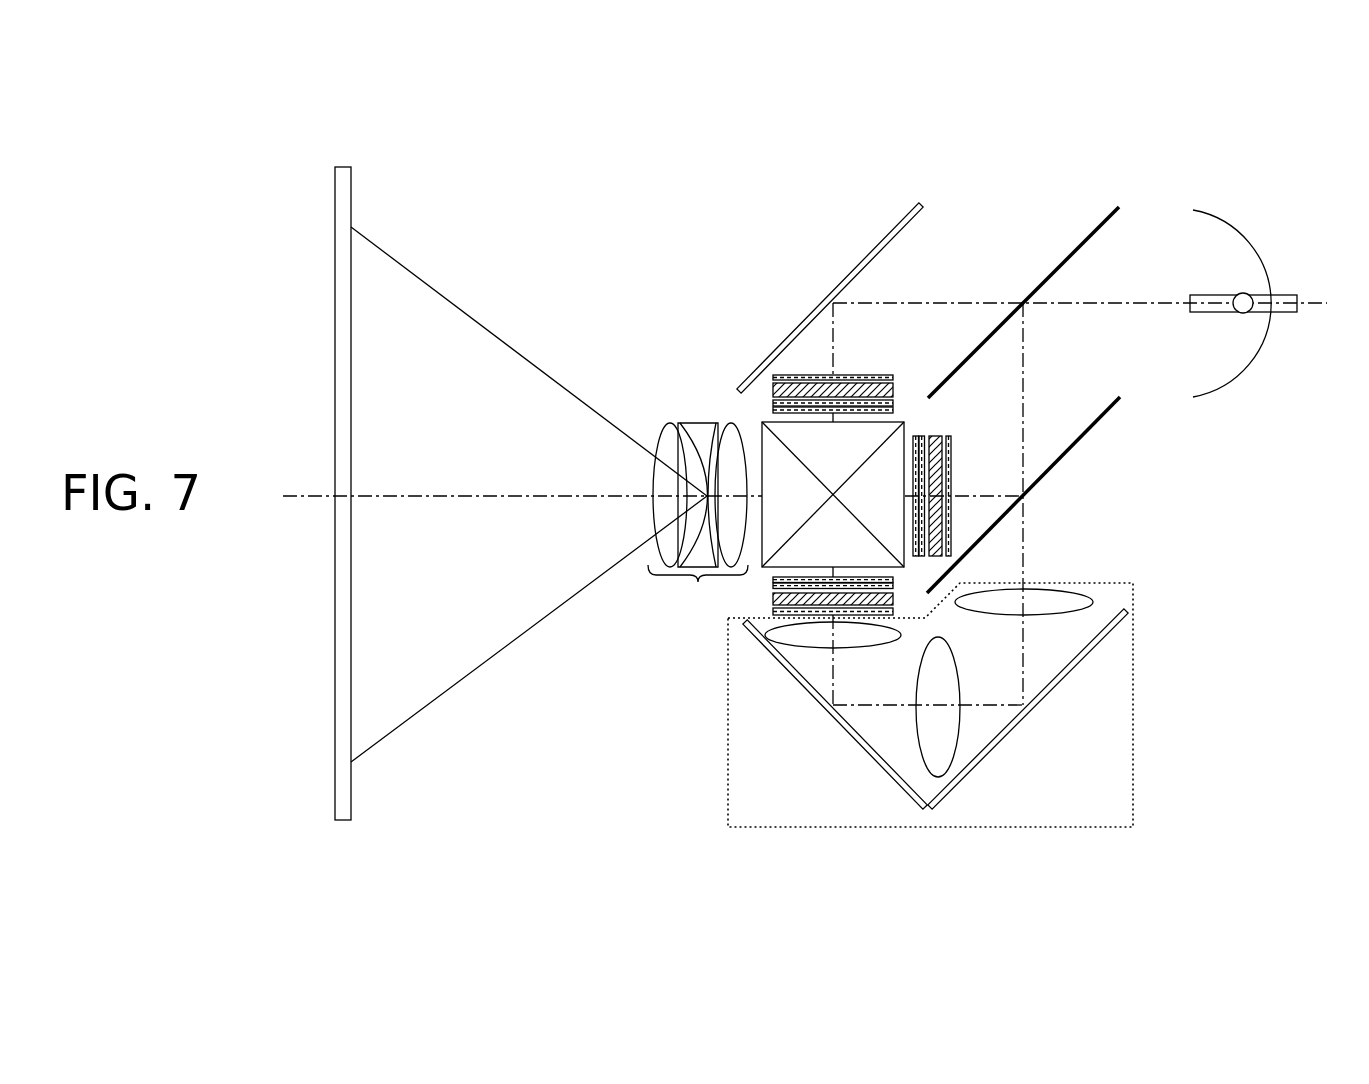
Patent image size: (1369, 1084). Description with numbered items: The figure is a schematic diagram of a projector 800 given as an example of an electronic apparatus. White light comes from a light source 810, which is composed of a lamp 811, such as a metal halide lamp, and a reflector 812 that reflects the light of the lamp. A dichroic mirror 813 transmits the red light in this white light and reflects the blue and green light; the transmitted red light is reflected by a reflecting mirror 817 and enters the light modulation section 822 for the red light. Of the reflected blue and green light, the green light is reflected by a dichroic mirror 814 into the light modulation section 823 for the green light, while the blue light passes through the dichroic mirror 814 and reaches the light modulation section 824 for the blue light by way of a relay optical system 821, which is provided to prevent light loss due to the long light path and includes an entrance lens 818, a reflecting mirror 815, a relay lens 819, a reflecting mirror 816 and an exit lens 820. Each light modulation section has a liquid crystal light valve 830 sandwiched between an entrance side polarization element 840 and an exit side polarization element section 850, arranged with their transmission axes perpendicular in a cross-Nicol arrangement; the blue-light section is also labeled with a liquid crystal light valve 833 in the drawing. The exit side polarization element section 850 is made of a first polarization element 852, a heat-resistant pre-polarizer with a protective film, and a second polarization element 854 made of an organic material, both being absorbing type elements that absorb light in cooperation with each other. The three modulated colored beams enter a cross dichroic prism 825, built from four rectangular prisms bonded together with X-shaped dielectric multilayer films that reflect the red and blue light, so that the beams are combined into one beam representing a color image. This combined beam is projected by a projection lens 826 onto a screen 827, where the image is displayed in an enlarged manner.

The projector 800 is at (420, 212).
The light source 810 is at (1217, 240).
The lamp 811 is at (1247, 293).
The reflector 812 is at (1250, 357).
The dichroic mirror 813 is at (1087, 240).
The dichroic mirror 814 is at (1103, 417).
The reflecting mirror 815 is at (1095, 647).
The reflecting mirror 816 is at (845, 730).
The reflecting mirror 817 is at (873, 252).
The entrance lens 818 is at (1050, 597).
The relay lens 819 is at (950, 725).
The exit lens 820 is at (802, 640).
The relay optical system 821 is at (1135, 750).
The light modulation section 822 is at (793, 303).
The light modulation section 823 is at (970, 457).
The light modulation section 824 is at (756, 601).
The cross dichroic prism 825 is at (905, 408).
The projection lens 826 is at (698, 597).
The screen 827 is at (345, 822).
The liquid crystal light valve 830 is at (767, 388).
The liquid crystal light valve 833 is at (893, 603).
The entrance side polarization element 840 is at (800, 373).
The exit side polarization element section 850 is at (672, 413).
The first polarization element 852 is at (773, 404).
The second polarization element 854 is at (773, 411).